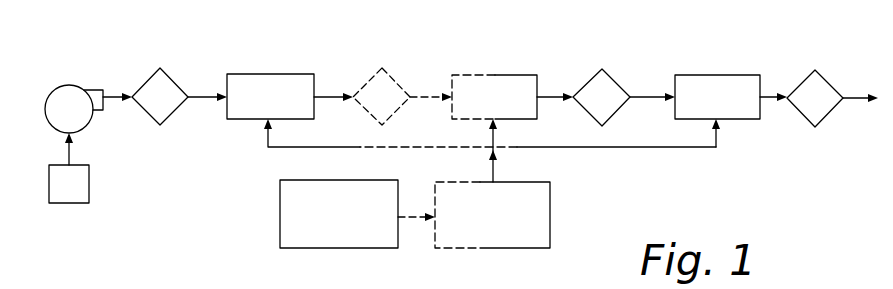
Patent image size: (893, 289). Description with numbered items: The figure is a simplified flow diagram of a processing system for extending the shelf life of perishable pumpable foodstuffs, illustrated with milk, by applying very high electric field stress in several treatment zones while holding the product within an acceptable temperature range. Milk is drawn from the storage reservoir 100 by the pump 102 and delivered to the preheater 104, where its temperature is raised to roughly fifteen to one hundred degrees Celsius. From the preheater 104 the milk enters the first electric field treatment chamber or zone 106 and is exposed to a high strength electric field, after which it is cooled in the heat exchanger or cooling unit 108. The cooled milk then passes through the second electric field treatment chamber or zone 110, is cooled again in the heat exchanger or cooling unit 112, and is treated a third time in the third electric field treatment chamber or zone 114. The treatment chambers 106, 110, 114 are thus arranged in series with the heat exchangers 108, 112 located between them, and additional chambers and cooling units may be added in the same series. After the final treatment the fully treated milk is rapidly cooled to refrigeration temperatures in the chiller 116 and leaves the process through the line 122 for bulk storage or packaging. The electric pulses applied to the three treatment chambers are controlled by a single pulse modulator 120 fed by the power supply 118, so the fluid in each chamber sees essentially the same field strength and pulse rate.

The storage reservoir 100 is at (89, 193).
The pump 102 is at (90, 124).
The preheater 104 is at (173, 115).
The first electric field treatment chamber or zone 106 is at (283, 74).
The heat exchanger or cooling unit 108 is at (393, 80).
The second electric field treatment chamber or zone 110 is at (520, 75).
The heat exchanger or cooling unit 112 is at (615, 80).
The third electric field treatment chamber or zone 114 is at (723, 75).
The chiller 116 is at (807, 125).
The power supply 118 is at (280, 217).
The pulse modulator 120 is at (550, 207).
The line 122 is at (848, 97).